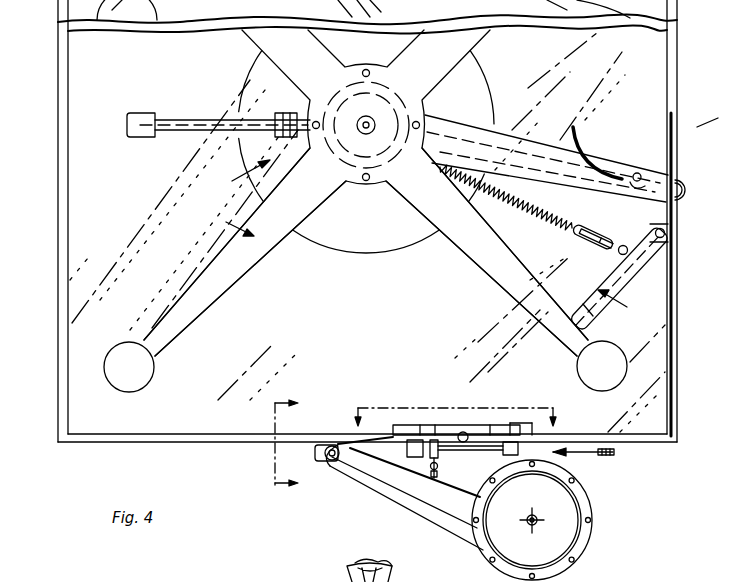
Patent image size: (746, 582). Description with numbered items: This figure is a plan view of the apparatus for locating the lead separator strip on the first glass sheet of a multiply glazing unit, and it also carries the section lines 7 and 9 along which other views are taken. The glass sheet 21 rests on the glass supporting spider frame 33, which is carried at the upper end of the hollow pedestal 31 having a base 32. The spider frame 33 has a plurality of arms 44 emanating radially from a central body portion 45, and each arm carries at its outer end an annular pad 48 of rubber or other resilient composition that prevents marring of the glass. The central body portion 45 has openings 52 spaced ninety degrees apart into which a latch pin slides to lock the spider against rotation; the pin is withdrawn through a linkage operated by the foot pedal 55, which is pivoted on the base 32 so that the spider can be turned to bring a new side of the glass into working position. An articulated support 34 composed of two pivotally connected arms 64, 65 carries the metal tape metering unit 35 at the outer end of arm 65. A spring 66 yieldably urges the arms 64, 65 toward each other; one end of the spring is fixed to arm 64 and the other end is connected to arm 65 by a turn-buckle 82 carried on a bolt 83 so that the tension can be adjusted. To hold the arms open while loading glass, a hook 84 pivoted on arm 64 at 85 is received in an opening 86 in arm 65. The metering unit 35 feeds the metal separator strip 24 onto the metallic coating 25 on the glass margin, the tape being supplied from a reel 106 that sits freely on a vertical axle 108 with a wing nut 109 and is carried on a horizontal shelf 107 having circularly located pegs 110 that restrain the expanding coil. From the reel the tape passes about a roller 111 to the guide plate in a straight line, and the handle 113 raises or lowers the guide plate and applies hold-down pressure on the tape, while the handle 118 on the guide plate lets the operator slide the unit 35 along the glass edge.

The sheet of glass 21 is at (88, 222).
The metal separator strip 24 is at (672, 157).
The metallic coating 25 is at (63, 163).
The pedestal 31 is at (237, 176).
The base 32 is at (366, 254).
The glass supporting spider frame 33 is at (226, 223).
The articulated support 34 is at (619, 279).
The metal tape metering unit 35 is at (412, 420).
The arms 44 is at (201, 297).
The central body portion 45 is at (374, 186).
The annular pad 48 is at (128, 360).
The openings 52 is at (427, 115).
The foot pedal 55 is at (172, 125).
The arm 64 is at (612, 165).
The arm 65 is at (599, 320).
The spring 66 is at (535, 216).
The turn-buckle 82 is at (598, 233).
The bolt 83 is at (628, 254).
The hook 84 is at (582, 149).
The pivot 85 is at (641, 172).
The opening 86 is at (665, 233).
The reel 106 is at (572, 498).
The horizontal shelf 107 is at (387, 474).
The vertical axle 108 is at (527, 516).
The wing nut 109 is at (538, 519).
The pegs 110 is at (577, 556).
The roller 111 is at (331, 462).
The handle 113 is at (438, 470).
The handle 118 is at (463, 431).
The section line 7- 7 is at (454, 420).
The section line 9- 9 is at (316, 411).